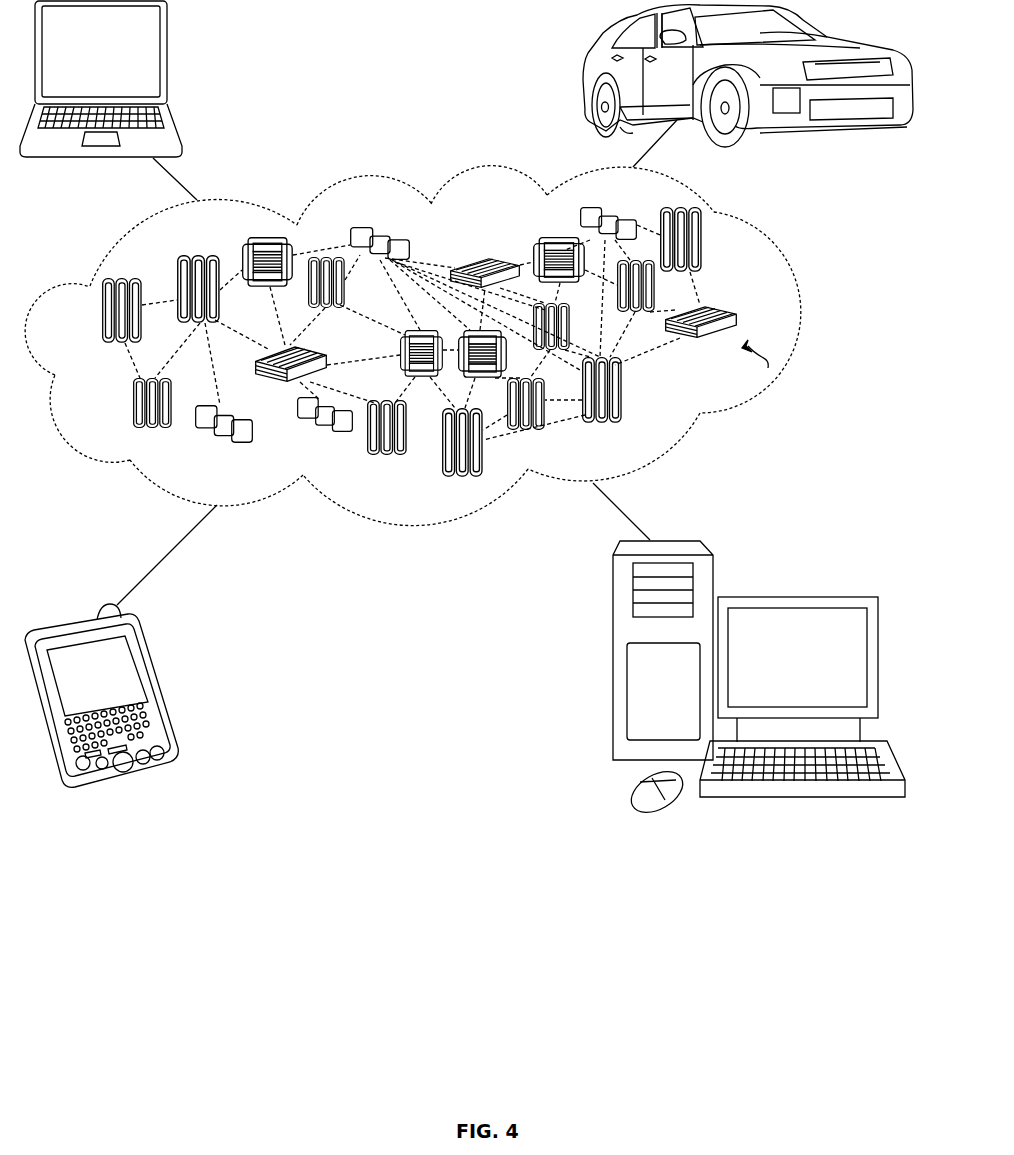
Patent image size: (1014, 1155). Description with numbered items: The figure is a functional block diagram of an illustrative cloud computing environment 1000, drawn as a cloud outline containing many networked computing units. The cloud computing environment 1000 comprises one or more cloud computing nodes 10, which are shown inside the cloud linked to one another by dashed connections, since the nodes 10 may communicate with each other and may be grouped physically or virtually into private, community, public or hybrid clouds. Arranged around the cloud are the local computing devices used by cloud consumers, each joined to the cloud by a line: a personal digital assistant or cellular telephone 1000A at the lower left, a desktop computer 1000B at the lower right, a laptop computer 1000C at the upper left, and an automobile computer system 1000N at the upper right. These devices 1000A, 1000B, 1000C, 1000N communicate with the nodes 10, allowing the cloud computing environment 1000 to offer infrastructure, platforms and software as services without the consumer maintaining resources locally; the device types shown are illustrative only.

The cloud computing environment 1000 is at (797, 322).
The cloud computing nodes 10 is at (768, 368).
The personal digital assistant (PDA) or cellular telephone 1000A is at (157, 688).
The desktop computer 1000B is at (793, 595).
The laptop computer 1000C is at (168, 60).
The automobile computer system 1000N is at (588, 75).